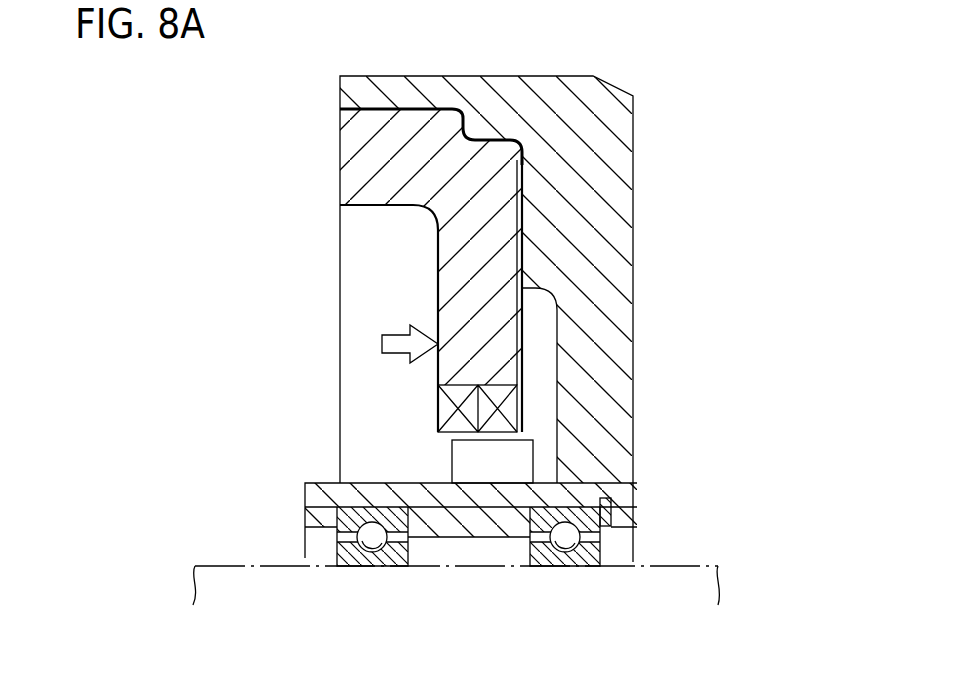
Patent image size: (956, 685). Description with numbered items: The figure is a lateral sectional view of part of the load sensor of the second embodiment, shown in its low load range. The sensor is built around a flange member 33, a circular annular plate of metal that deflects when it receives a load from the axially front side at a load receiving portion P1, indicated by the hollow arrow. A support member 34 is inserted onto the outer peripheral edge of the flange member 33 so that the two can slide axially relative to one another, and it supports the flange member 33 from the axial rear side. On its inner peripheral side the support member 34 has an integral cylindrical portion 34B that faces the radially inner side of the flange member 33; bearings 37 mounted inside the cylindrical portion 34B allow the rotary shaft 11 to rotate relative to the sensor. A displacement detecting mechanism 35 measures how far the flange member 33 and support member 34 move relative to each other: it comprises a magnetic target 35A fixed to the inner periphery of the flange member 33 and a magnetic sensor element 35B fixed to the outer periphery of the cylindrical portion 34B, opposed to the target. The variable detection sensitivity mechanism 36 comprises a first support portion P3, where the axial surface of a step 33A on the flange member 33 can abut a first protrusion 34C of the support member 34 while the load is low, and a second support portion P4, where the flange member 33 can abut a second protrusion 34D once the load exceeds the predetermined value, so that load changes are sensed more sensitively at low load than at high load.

The rotary shaft 11 is at (690, 572).
The flange member 33 is at (352, 151).
The step 33A is at (480, 127).
The support member 34 is at (620, 188).
The cylindrical portion 34B is at (487, 494).
The first protrusion 34C is at (484, 128).
The second protrusion 34D is at (535, 273).
The displacement detecting mechanism 35 is at (435, 442).
The magnetic target 35A is at (510, 407).
The magnetic sensor element 35B is at (520, 455).
The variable detection sensitivity mechanism 36 is at (513, 132).
The bearings 37 is at (615, 523).
The load receiving portion P1 is at (437, 347).
The first support portion P3 is at (455, 130).
The second support portion P4 is at (525, 290).